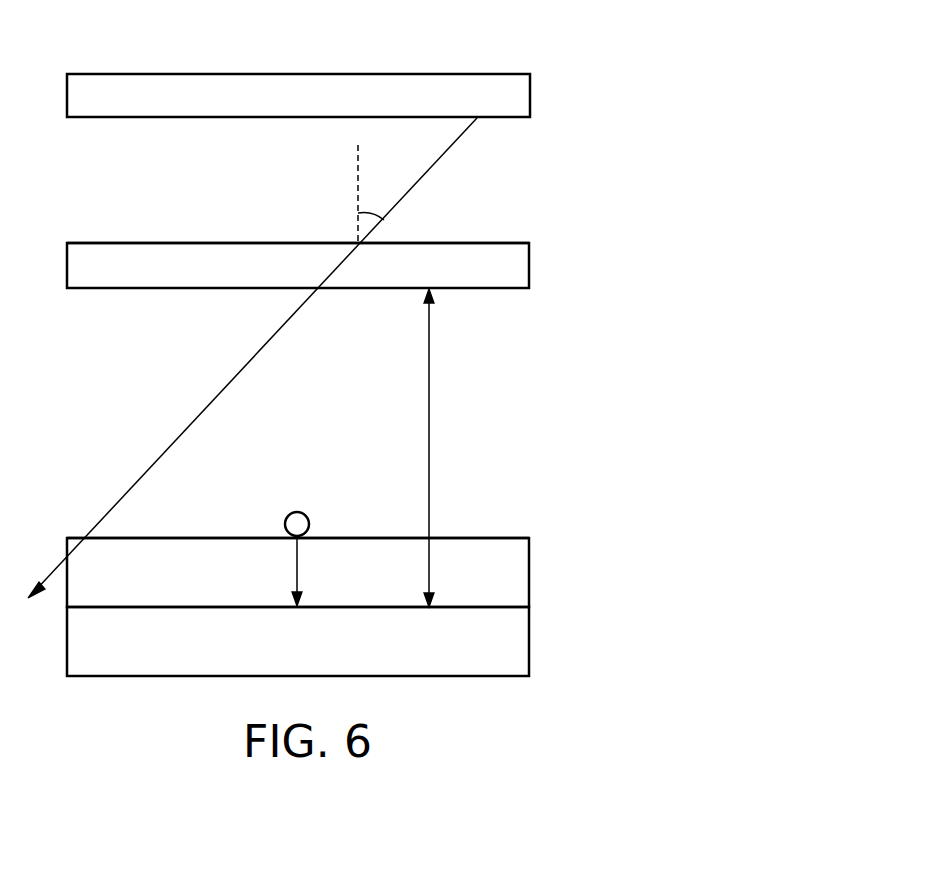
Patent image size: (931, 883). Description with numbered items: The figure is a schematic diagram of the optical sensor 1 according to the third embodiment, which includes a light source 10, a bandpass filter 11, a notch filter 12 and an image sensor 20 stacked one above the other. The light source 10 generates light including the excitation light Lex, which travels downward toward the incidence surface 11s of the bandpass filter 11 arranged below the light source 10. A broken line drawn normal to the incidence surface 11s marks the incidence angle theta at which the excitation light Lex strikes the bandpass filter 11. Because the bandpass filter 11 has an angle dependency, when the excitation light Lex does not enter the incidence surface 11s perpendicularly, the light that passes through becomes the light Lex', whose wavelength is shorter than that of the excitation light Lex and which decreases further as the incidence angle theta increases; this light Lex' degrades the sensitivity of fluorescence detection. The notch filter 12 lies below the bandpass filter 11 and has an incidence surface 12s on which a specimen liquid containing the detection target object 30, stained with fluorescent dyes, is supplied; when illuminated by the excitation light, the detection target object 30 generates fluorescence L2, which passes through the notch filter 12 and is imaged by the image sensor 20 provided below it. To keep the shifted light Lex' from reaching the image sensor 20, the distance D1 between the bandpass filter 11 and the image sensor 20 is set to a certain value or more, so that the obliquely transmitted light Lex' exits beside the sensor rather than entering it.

The optical sensor 1 is at (514, 43).
The light source 10 is at (530, 99).
The bandpass filter 11 is at (530, 268).
The incidence surface 11s is at (503, 243).
The notch filter 12 is at (530, 561).
The incidence surface 12s is at (503, 538).
The image sensor 20 is at (530, 645).
The detection target object 30 is at (306, 514).
The excitation light Lex is at (437, 180).
The light Lex' is at (194, 420).
The incidence angle theta is at (371, 194).
The distance D1 is at (429, 432).
The fluorescence L2 is at (298, 565).